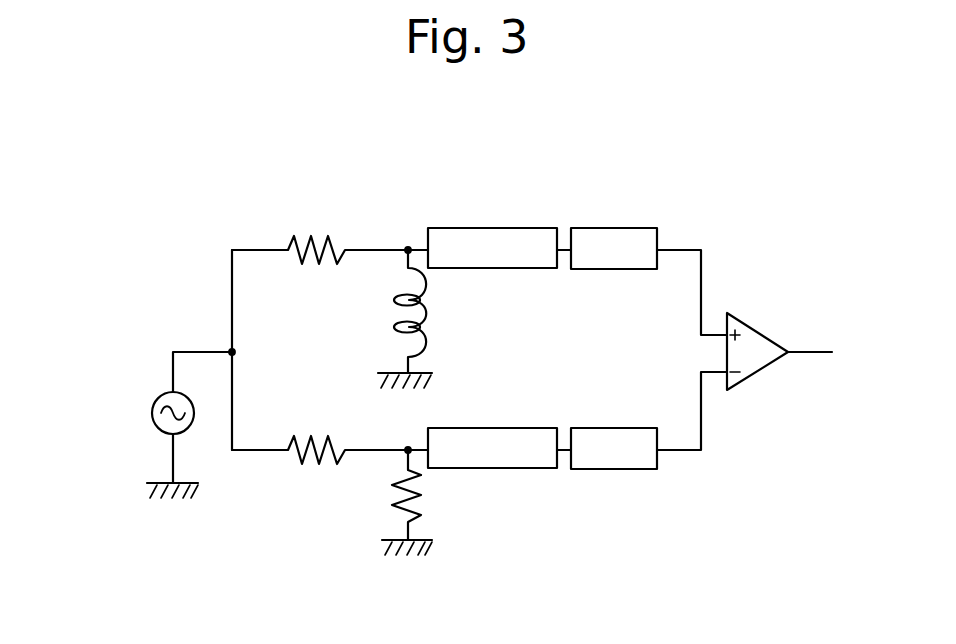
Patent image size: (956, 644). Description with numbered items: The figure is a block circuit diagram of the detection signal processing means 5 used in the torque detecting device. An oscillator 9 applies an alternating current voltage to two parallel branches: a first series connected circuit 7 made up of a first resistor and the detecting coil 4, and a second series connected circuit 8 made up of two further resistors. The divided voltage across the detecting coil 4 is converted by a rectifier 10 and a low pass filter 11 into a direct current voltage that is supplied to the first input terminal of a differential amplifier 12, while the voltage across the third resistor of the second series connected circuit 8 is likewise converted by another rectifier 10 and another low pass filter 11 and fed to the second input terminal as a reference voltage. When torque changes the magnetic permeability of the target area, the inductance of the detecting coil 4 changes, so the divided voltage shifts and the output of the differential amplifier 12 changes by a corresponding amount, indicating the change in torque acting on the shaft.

The detecting coil 4 is at (393, 328).
The detection signal processing means 5 is at (765, 210).
The first series connected circuit 7 is at (440, 195).
The second series connected circuit 8 is at (443, 567).
The oscillator 9 is at (156, 396).
The rectifier 10 is at (512, 228).
The low pass filter 11 is at (612, 228).
The differential amplifier 12 is at (768, 366).